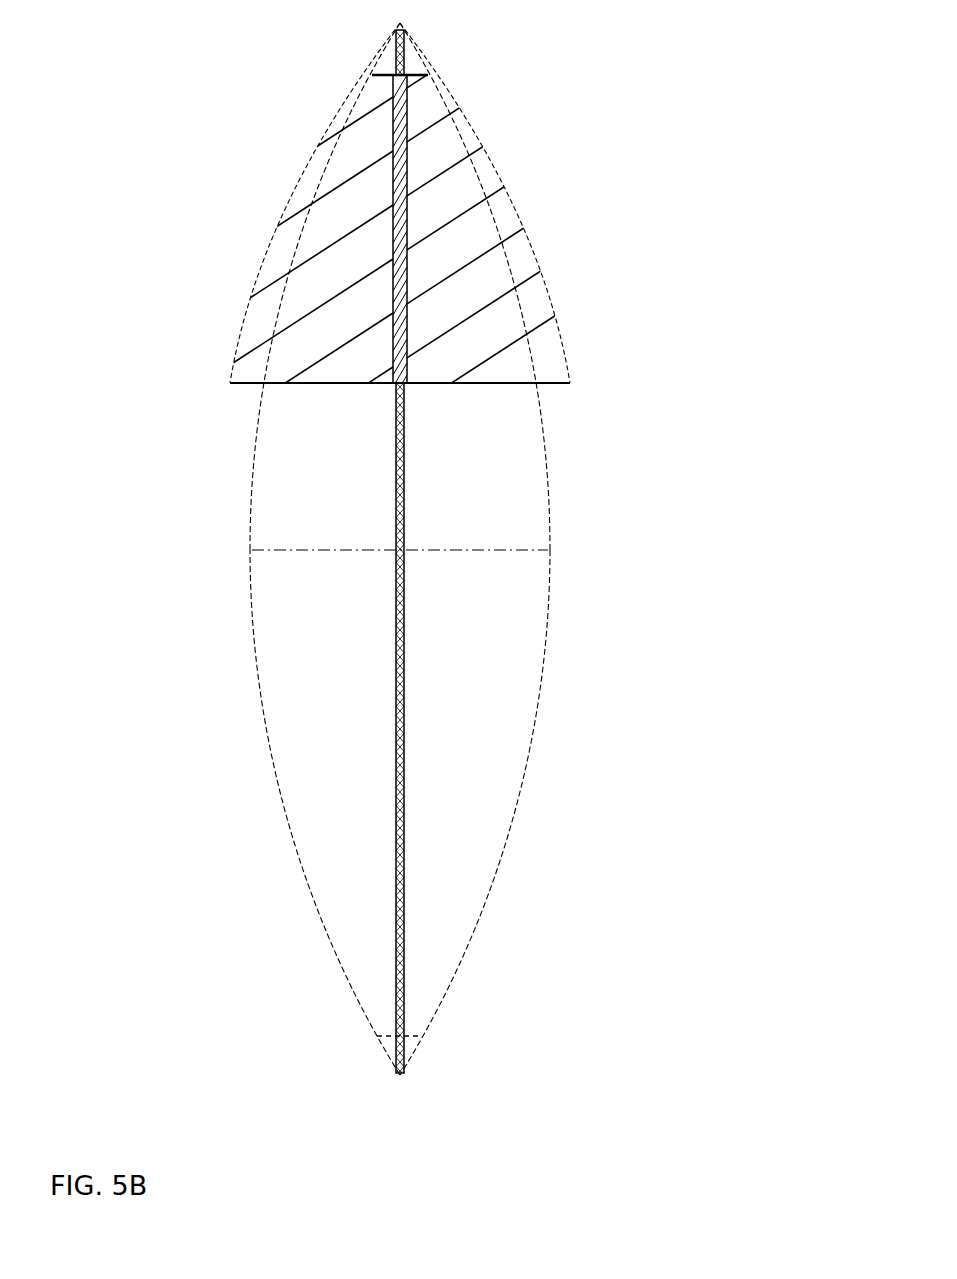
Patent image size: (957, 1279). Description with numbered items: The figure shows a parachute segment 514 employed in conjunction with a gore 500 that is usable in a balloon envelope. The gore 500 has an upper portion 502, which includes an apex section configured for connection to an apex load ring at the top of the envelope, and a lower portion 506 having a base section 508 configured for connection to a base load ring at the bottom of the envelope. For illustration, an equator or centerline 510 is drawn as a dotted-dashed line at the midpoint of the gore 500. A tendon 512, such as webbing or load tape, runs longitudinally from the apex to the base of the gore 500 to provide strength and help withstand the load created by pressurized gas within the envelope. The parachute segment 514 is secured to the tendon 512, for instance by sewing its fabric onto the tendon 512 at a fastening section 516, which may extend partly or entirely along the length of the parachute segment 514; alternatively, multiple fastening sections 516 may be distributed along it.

The gore 500 is at (160, 1105).
The upper portion 502 is at (617, 432).
The lower portion 506 is at (566, 890).
The base section 508 is at (422, 1036).
The equator or centerline 510 is at (251, 550).
The tendon 512 is at (395, 812).
The parachute segment 514 is at (287, 203).
The fastening section 516 is at (407, 180).